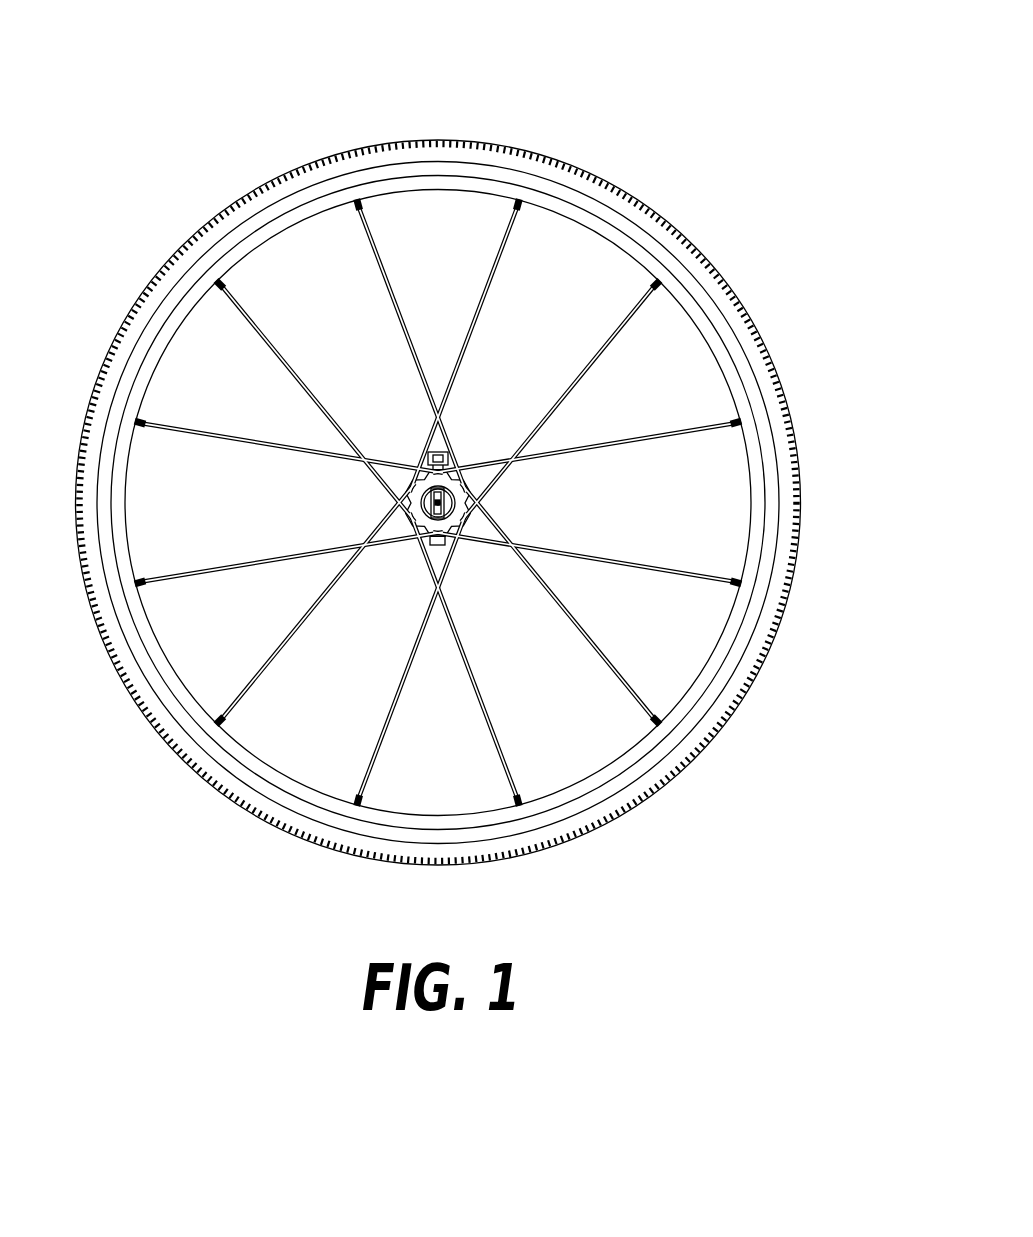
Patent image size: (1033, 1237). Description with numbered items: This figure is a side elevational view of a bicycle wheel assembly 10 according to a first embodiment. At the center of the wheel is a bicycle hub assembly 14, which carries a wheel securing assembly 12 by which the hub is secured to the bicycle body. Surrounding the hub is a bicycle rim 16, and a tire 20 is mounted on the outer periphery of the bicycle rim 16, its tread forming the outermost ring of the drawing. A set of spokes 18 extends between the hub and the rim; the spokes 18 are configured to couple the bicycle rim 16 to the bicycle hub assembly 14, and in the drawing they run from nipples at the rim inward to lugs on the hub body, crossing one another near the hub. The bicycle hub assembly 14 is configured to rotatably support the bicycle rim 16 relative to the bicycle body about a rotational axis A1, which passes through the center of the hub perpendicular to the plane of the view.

The bicycle wheel assembly 10 is at (438, 457).
The wheel securing assembly 12 is at (449, 522).
The bicycle hub assembly 14 is at (435, 547).
The bicycle rim 16 is at (590, 228).
The spokes 18 is at (483, 280).
The tire 20 is at (613, 200).
The rotational axis A1 is at (428, 505).